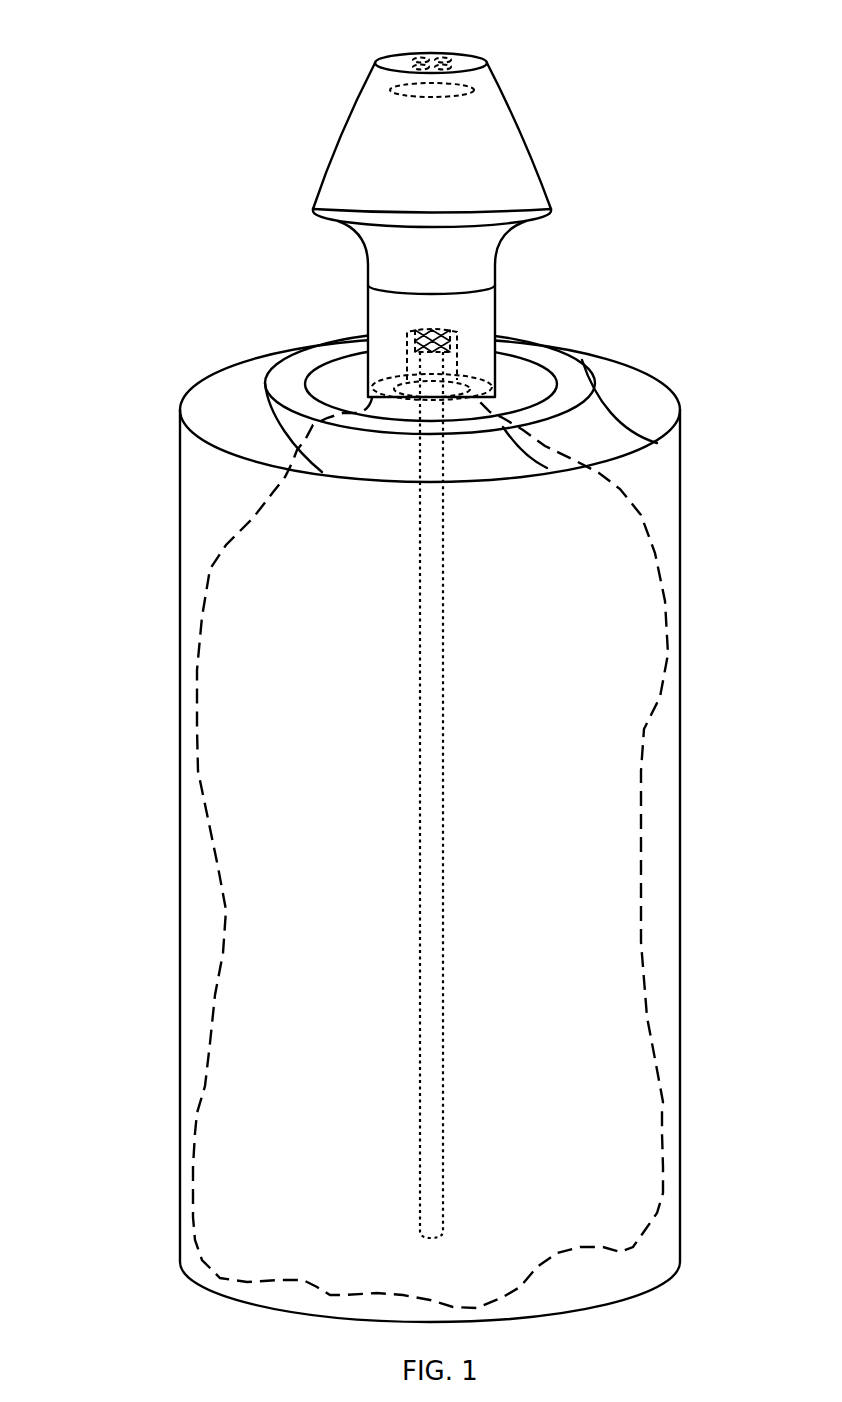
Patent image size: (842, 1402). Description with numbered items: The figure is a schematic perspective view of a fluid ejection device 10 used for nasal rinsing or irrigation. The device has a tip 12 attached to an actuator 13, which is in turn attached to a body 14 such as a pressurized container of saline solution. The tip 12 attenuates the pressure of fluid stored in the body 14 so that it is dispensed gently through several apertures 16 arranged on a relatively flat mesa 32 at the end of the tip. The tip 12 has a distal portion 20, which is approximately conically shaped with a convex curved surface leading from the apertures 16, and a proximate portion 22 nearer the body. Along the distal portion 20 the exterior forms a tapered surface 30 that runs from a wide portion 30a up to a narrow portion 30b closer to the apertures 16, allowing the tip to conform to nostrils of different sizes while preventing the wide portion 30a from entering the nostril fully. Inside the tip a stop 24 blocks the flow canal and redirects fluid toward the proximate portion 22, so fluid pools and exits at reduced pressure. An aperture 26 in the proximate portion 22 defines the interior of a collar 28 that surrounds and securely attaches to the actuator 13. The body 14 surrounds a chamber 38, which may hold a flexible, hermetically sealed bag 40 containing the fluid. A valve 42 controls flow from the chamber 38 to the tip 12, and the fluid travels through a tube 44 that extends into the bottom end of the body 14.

The fluid ejection device 10 is at (112, 321).
The tip 12 is at (298, 55).
The actuator 13 is at (410, 358).
The body 14 is at (163, 337).
The apertures 16 is at (459, 51).
The distal portion 20 is at (557, 53).
The proximate portion 22 is at (557, 223).
The stop 24 is at (433, 93).
The aperture 26 is at (472, 387).
The collar 28 is at (472, 386).
The tapered surface 30 is at (498, 104).
The wide portion 30a is at (318, 198).
The narrow portion 30b is at (364, 80).
The mesa 32 is at (385, 63).
The chamber 38 is at (667, 488).
The bag 40 is at (640, 931).
The valve 42 is at (430, 330).
The tube 44 is at (420, 748).